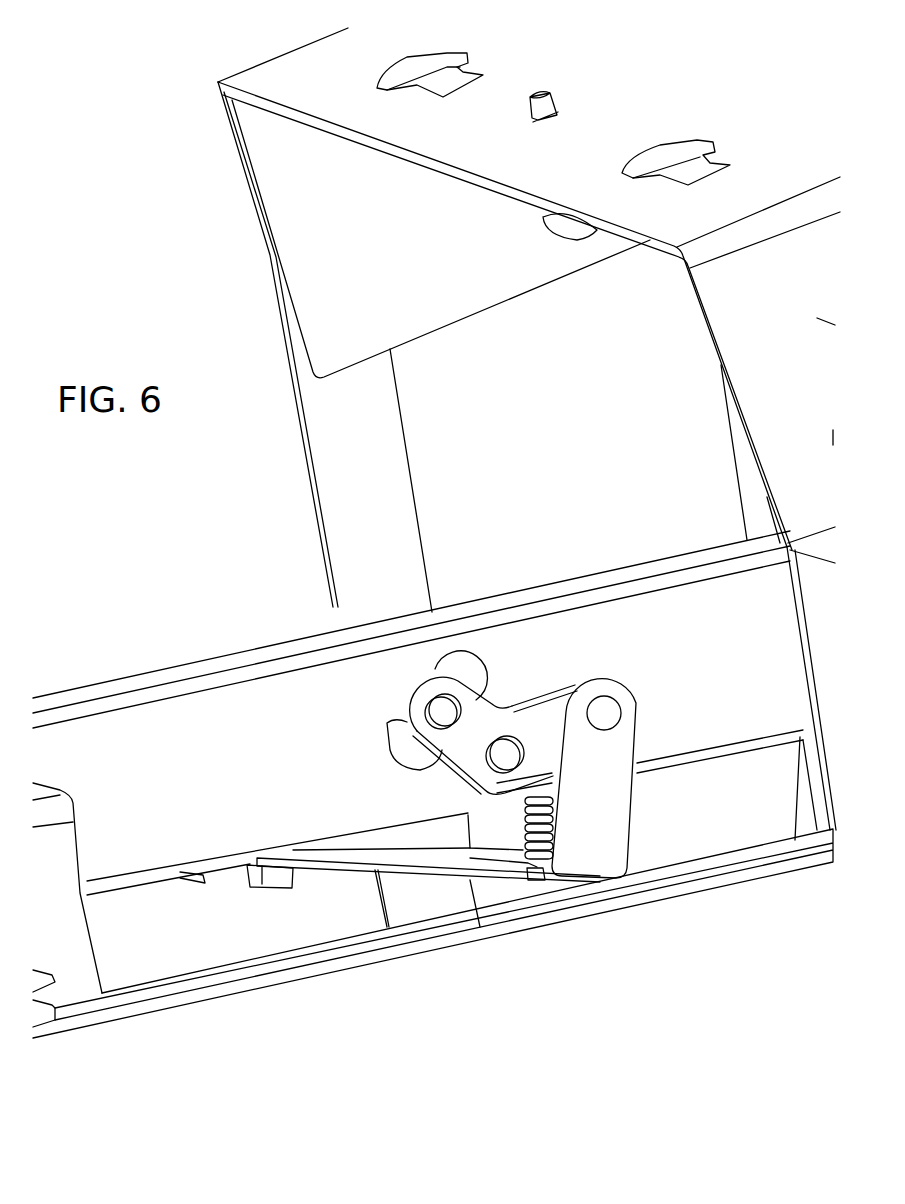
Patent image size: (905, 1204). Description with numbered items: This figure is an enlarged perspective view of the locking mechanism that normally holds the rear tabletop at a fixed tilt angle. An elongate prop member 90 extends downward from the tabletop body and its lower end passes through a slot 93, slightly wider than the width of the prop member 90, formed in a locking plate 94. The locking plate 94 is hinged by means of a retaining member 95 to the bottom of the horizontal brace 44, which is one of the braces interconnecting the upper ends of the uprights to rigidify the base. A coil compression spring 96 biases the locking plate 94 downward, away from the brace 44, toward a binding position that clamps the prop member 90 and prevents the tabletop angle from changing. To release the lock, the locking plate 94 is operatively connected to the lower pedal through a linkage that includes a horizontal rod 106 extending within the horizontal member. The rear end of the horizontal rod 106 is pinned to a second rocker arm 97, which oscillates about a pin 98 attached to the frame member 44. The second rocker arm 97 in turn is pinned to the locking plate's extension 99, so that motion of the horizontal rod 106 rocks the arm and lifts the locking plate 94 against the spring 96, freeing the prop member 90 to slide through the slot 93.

The horizontal brace 44 is at (225, 660).
The prop member 90 is at (393, 498).
The slot 93 is at (452, 842).
The locking plate 94 is at (427, 873).
The retaining member 95 is at (258, 885).
The coil compression spring 96 is at (533, 849).
The second rocker arm 97 is at (543, 700).
The pin 98 is at (472, 750).
The locking plate extension 99 is at (602, 820).
The horizontal rod 106 is at (390, 747).